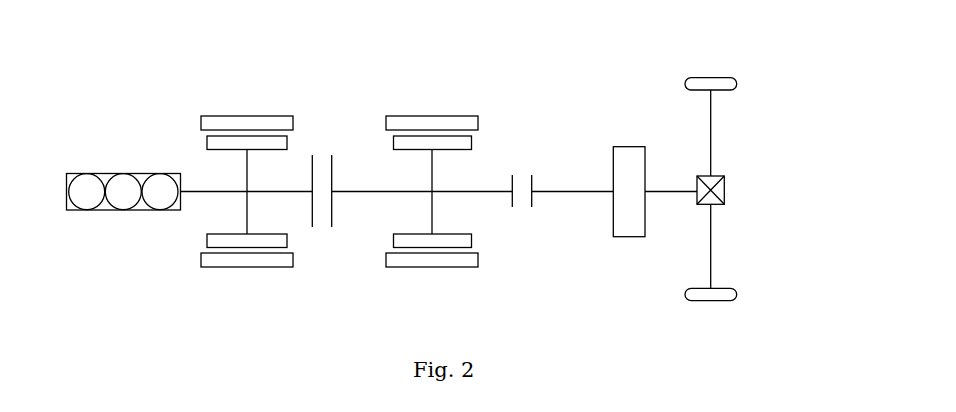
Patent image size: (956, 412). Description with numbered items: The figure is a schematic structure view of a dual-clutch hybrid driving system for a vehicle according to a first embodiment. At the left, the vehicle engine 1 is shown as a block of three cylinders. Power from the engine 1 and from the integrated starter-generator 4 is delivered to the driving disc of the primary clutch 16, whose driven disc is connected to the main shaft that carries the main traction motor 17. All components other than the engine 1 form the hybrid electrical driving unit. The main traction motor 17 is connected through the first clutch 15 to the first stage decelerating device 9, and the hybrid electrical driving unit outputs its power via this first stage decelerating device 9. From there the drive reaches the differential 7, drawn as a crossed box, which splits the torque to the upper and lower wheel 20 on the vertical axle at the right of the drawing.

The engine 1 is at (123, 210).
The integrated starter-generator 4 is at (242, 115).
The primary clutch 16 is at (320, 150).
The main traction motor 17 is at (432, 115).
The first clutch 15 is at (523, 173).
The first stage decelerating device 9 is at (628, 143).
The differential 7 is at (725, 190).
The wheel 20 is at (737, 83).